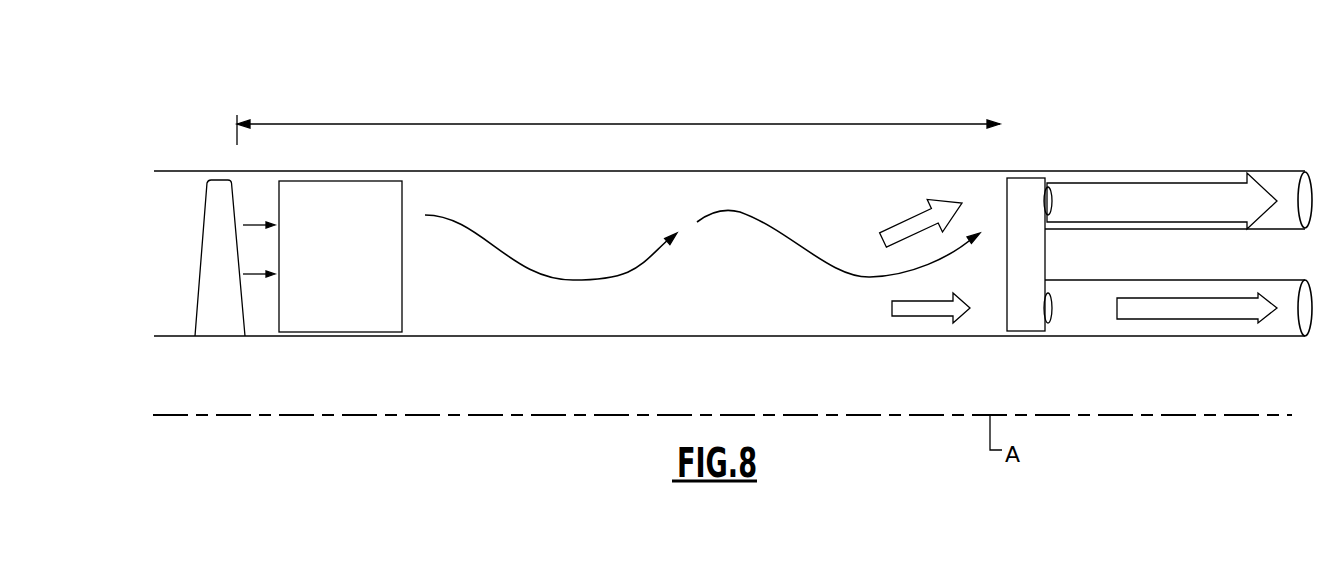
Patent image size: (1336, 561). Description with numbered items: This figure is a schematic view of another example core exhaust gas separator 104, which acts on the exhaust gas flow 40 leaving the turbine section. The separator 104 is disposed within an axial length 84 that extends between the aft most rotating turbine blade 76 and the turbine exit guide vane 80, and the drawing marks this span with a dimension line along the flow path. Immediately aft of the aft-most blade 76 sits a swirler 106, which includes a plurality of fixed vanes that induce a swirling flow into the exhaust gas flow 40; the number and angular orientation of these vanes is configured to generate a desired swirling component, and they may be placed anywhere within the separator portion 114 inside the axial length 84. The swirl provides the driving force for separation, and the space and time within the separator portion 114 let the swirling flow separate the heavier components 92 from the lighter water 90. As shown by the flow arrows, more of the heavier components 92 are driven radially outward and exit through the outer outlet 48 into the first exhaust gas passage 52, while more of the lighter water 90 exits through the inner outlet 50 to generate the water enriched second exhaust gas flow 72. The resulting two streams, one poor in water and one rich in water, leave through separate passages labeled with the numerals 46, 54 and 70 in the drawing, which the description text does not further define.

The separator 104 is at (1139, 47).
The inlet 46 is at (233, 165).
The exhaust gas flow 40 is at (262, 207).
The swirler 106 is at (355, 197).
The axial length 84 is at (623, 124).
The aft most rotating turbine blade 76 is at (225, 323).
The separator portion 114 is at (515, 317).
The turbine exit guide vane 80 is at (998, 200).
The components 92 is at (897, 227).
The water 90 is at (937, 305).
The outer outlet 48 is at (1045, 192).
The inner outlet 50 is at (1042, 310).
The first exhaust gas passage 52 is at (1278, 170).
The second outlet pipe 54 is at (1278, 338).
The H2O poor exhaust flow 70 is at (1097, 180).
The second exhaust gas flow 72 is at (1120, 310).